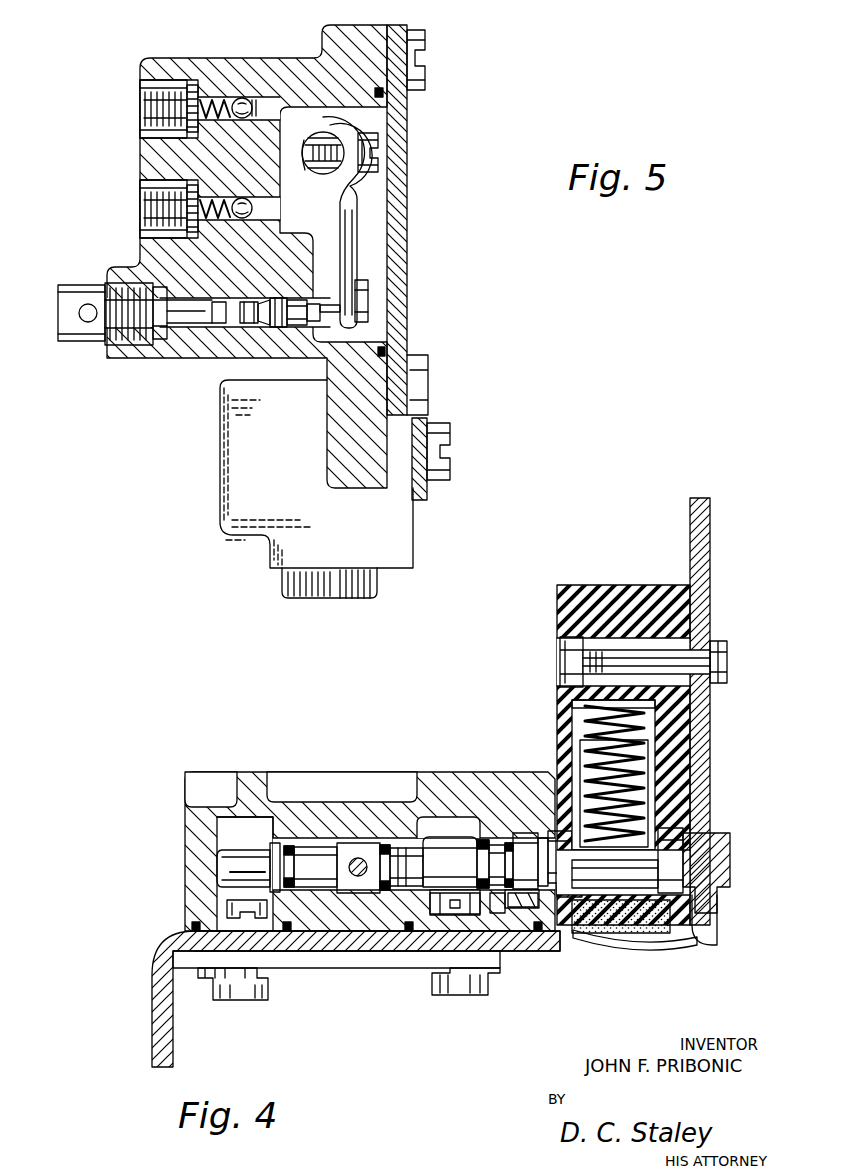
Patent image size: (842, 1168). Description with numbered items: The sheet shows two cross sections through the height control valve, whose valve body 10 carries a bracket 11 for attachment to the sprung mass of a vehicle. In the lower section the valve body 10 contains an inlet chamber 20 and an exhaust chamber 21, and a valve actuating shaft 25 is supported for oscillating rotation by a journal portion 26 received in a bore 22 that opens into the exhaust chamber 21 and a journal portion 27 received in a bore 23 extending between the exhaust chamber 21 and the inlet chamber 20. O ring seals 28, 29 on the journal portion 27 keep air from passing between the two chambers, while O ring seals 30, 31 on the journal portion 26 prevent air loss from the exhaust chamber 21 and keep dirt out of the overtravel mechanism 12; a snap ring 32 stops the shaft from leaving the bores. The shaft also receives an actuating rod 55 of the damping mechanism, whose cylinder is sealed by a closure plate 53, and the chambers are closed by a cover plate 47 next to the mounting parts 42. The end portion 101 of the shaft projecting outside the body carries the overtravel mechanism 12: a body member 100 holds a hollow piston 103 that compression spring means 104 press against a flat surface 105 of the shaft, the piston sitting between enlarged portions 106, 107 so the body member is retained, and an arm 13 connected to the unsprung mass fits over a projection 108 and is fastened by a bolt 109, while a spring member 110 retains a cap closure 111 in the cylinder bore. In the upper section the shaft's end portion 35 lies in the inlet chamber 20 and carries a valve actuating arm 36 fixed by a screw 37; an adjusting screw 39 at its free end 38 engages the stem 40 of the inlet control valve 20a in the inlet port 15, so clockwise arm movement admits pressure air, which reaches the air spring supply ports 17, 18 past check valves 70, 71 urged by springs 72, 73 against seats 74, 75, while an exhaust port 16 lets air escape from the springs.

In FIG. 5, the valve body 10 is at (147, 57).
In FIG. 4, the valve body 10 is at (253, 772).
In FIG. 4, the bracket 11 is at (156, 1012).
In FIG. 4, the overtravel mechanism 12 is at (594, 584).
In FIG. 4, the arm 13 is at (699, 530).
In FIG. 5, the inlet port 15 is at (132, 345).
In FIG. 5, the exhaust port 16 is at (70, 300).
In FIG. 5, the air spring supply port 17 is at (152, 122).
In FIG. 5, the air spring supply port 18 is at (145, 203).
In FIG. 5, the inlet chamber 20 is at (365, 253).
In FIG. 4, the inlet chamber 20 is at (227, 833).
In FIG. 5, the inlet air pressure control valve 20a is at (253, 318).
In FIG. 4, the exhaust chamber 21 is at (451, 836).
In FIG. 4, the bore 22 is at (520, 890).
In FIG. 4, the bore 23 is at (385, 843).
In FIG. 5, the valve actuating shaft 25 is at (308, 172).
In FIG. 4, the valve actuating shaft 25 is at (222, 867).
In FIG. 4, the journal portion 26 is at (507, 838).
In FIG. 4, the journal portion 27 is at (340, 847).
In FIG. 4, the O ring seal 28 is at (288, 845).
In FIG. 4, the O ring seal 29 is at (410, 846).
In FIG. 4, the O ring seal 30 is at (512, 890).
In FIG. 4, the O ring seal 31 is at (570, 890).
In FIG. 4, the snap ring 32 is at (278, 900).
In FIG. 5, the end portion 35 is at (317, 132).
In FIG. 4, the end portion 35 is at (235, 875).
In FIG. 5, the valve actuating arm 36 is at (350, 222).
In FIG. 4, the valve actuating arm 36 is at (228, 905).
In FIG. 5, the screw 37 is at (378, 143).
In FIG. 5, the free end 38 is at (340, 325).
In FIG. 5, the adjusting screw 39 is at (369, 298).
In FIG. 5, the stem 40 is at (318, 330).
In FIG. 4, the retainer 42 is at (430, 905).
In FIG. 5, the cover plate 47 is at (400, 235).
In FIG. 4, the cover plate 47 is at (359, 940).
In FIG. 5, the closure plate 53 is at (440, 425).
In FIG. 4, the closure plate 53 is at (390, 962).
In FIG. 4, the actuating rod 55 is at (358, 858).
In FIG. 5, the check valve 70 is at (240, 98).
In FIG. 5, the check valve 71 is at (238, 215).
In FIG. 5, the spring 72 is at (215, 97).
In FIG. 5, the spring 73 is at (205, 220).
In FIG. 5, the seat 74 is at (252, 99).
In FIG. 5, the seat 75 is at (280, 234).
In FIG. 4, the body member 100 is at (675, 712).
In FIG. 4, the end portion 101 is at (688, 868).
In FIG. 4, the piston 103 is at (650, 763).
In FIG. 4, the compression spring means 104 is at (648, 725).
In FIG. 4, the flat surface 105 is at (620, 905).
In FIG. 4, the enlarged portion 106 is at (553, 838).
In FIG. 4, the enlarged portion 107 is at (680, 837).
In FIG. 4, the projection 108 is at (726, 853).
In FIG. 4, the bolt 109 is at (724, 643).
In FIG. 4, the spring member 110 is at (714, 932).
In FIG. 4, the cap closure 111 is at (672, 944).